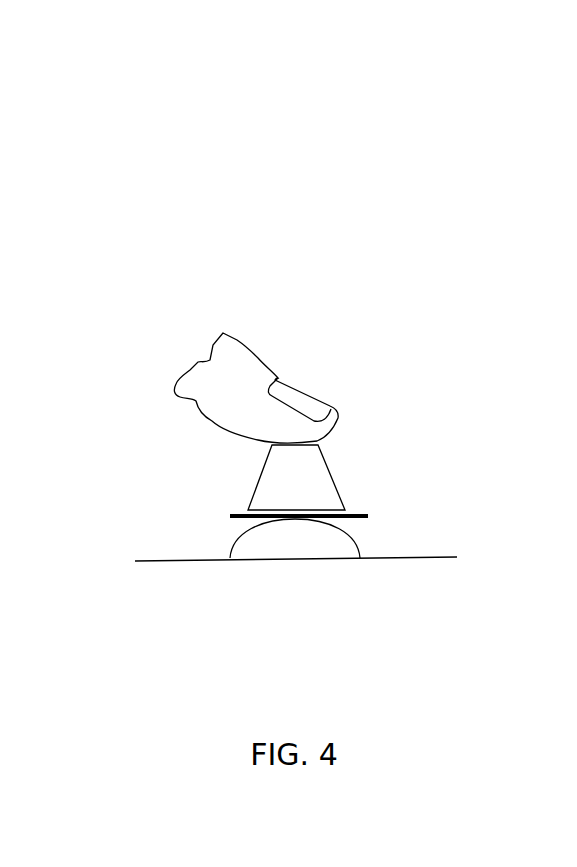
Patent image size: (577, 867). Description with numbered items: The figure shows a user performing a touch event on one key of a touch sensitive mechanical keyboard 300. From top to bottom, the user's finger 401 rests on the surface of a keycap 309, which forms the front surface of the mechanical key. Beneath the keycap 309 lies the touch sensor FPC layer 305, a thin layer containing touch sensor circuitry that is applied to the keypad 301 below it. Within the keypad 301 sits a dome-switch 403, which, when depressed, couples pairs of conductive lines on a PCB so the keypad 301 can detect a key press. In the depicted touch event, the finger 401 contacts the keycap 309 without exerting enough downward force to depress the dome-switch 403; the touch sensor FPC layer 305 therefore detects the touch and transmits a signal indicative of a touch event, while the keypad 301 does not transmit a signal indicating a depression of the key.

The touch sensitive mechanical keyboard 300 is at (113, 81).
The finger 401 is at (236, 337).
The keycap 309 is at (333, 472).
The touch sensor FPC layer 305 is at (368, 518).
The dome-switch 403 is at (240, 537).
The keypad 301 is at (210, 562).